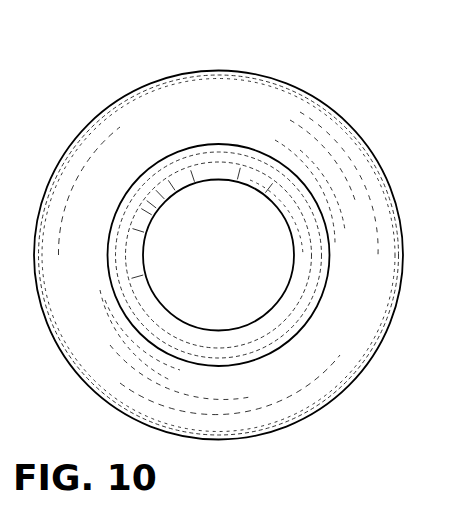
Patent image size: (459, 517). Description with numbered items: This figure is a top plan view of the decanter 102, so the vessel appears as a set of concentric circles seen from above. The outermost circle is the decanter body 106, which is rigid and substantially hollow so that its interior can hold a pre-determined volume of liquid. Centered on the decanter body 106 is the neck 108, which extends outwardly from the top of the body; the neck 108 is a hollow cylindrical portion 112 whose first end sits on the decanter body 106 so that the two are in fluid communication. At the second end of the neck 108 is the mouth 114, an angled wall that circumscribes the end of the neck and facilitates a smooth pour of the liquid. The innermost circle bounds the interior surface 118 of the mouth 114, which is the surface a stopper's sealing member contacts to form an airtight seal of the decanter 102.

The decanter 102 is at (78, 91).
The decanter body 106 is at (168, 98).
The neck 108 is at (280, 212).
The hollow cylindrical portion 112 is at (257, 201).
The mouth 114 is at (260, 165).
The interior surface 118 is at (303, 243).